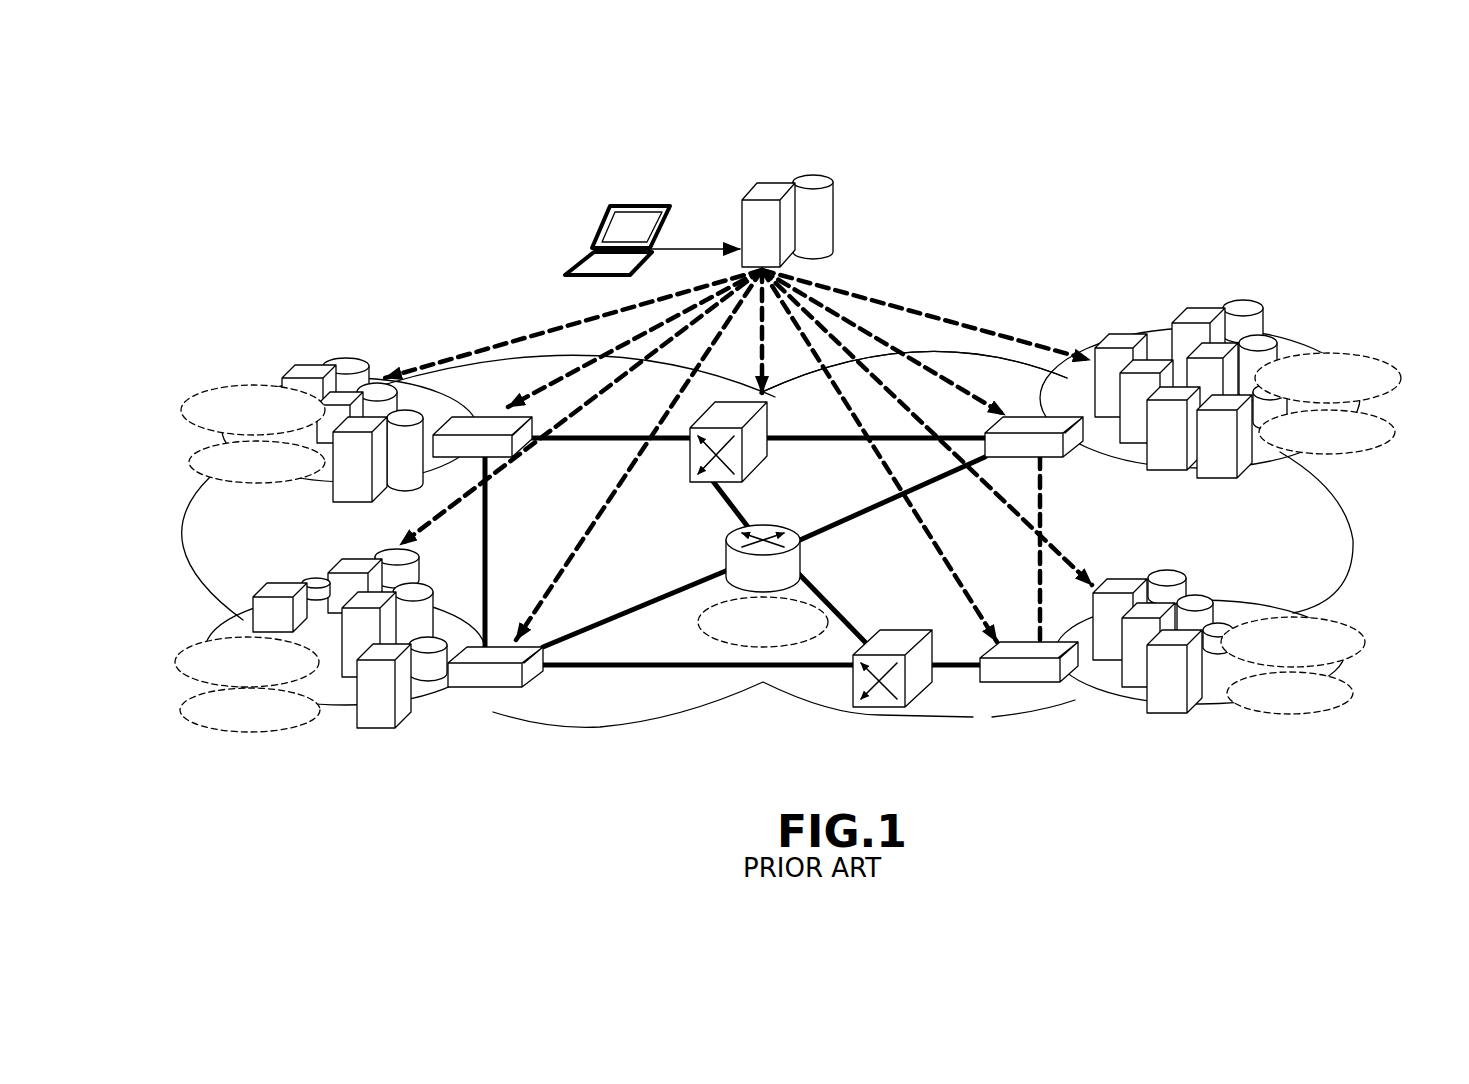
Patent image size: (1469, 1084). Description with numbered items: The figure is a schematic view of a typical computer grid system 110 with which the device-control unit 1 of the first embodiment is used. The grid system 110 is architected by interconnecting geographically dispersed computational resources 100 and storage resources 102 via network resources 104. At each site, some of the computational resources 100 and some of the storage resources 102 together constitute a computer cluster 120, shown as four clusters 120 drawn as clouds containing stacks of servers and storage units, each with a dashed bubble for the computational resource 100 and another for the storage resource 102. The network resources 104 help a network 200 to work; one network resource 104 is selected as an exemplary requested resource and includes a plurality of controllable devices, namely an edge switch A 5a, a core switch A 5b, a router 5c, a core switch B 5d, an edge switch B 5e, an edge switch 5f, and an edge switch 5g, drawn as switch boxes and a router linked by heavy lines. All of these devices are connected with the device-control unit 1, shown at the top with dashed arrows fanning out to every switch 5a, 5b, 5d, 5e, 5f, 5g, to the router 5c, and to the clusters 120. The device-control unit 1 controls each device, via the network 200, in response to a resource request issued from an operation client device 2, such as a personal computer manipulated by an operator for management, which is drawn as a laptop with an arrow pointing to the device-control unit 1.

The device-control unit 1 is at (832, 203).
The operation client device 2 is at (650, 205).
The computer grid system 110 is at (1058, 218).
The computer cluster 120 is at (335, 330).
The computational resource 100 is at (242, 385).
The storage resource 102 is at (190, 443).
The network resource 104 is at (735, 648).
The network 200 is at (957, 353).
The edge switch A 5a is at (480, 417).
The core switch A 5b is at (767, 428).
The router 5c is at (793, 523).
The core switch B 5d is at (897, 630).
The edge switch B 5e is at (1010, 642).
The edge switch 5f is at (543, 647).
The edge switch 5g is at (1031, 417).